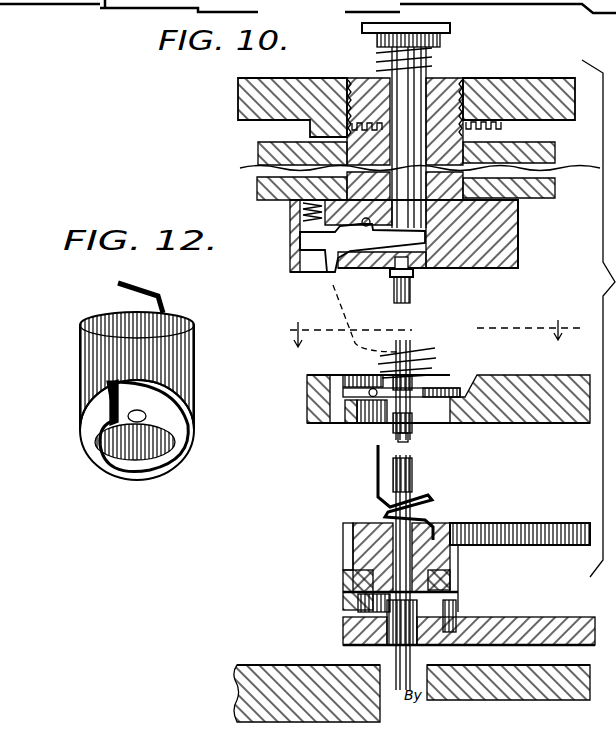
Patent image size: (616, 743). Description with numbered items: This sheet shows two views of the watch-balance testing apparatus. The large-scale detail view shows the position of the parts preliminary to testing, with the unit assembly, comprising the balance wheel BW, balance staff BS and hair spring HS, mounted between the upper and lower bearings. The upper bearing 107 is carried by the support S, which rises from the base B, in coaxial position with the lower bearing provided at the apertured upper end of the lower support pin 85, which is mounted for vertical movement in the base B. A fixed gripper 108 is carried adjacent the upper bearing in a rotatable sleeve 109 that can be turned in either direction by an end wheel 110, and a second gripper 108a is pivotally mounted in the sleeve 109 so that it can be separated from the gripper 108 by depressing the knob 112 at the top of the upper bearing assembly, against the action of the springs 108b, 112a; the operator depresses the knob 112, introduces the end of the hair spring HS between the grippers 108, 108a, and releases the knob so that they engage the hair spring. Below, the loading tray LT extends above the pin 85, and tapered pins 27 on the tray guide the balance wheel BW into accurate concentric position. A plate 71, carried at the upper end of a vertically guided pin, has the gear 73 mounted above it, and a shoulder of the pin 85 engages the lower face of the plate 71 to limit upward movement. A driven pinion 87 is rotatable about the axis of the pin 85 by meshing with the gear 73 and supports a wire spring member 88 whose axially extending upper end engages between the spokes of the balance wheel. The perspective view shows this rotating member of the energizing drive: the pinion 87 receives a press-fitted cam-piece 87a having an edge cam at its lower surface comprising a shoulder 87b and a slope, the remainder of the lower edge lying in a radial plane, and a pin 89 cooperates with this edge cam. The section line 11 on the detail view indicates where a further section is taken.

In FIG. 10, the knob 112 is at (452, 29).
In FIG. 10, the spring 112a is at (442, 51).
In FIG. 10, the end wheel 110 is at (513, 82).
In FIG. 10, the support S is at (258, 150).
In FIG. 10, the spring 108b is at (290, 220).
In FIG. 10, the rotatable sleeve 109 is at (508, 235).
In FIG. 10, the upper bearing 107 is at (414, 290).
In FIG. 10, the second gripper 108a is at (332, 285).
In FIG. 10, the fixed gripper 108 is at (353, 290).
In FIG. 10, the section line 11 is at (433, 335).
In FIG. 10, the hair spring HS is at (424, 362).
In FIG. 10, the pins 27 is at (345, 423).
In FIG. 10, the balance wheel BW is at (459, 387).
In FIG. 10, the loading tray LT is at (557, 361).
In FIG. 10, the balance staff BS is at (411, 430).
In FIG. 10, the wire spring member 88 is at (378, 468).
In FIG. 12, the wire spring member 88 is at (168, 294).
In FIG. 10, the lower support pin 85 is at (412, 478).
In FIG. 10, the driven pinion 87 is at (356, 539).
In FIG. 12, the driven pinion 87 is at (86, 347).
In FIG. 10, the cam-piece 87a is at (344, 591).
In FIG. 12, the cam-piece 87a is at (90, 400).
In FIG. 10, the shoulder 87b is at (462, 598).
In FIG. 12, the shoulder 87b is at (107, 408).
In FIG. 10, the gear 73 is at (527, 515).
In FIG. 10, the pin 89 is at (455, 613).
In FIG. 10, the plate 71 is at (469, 618).
In FIG. 10, the base B is at (255, 672).